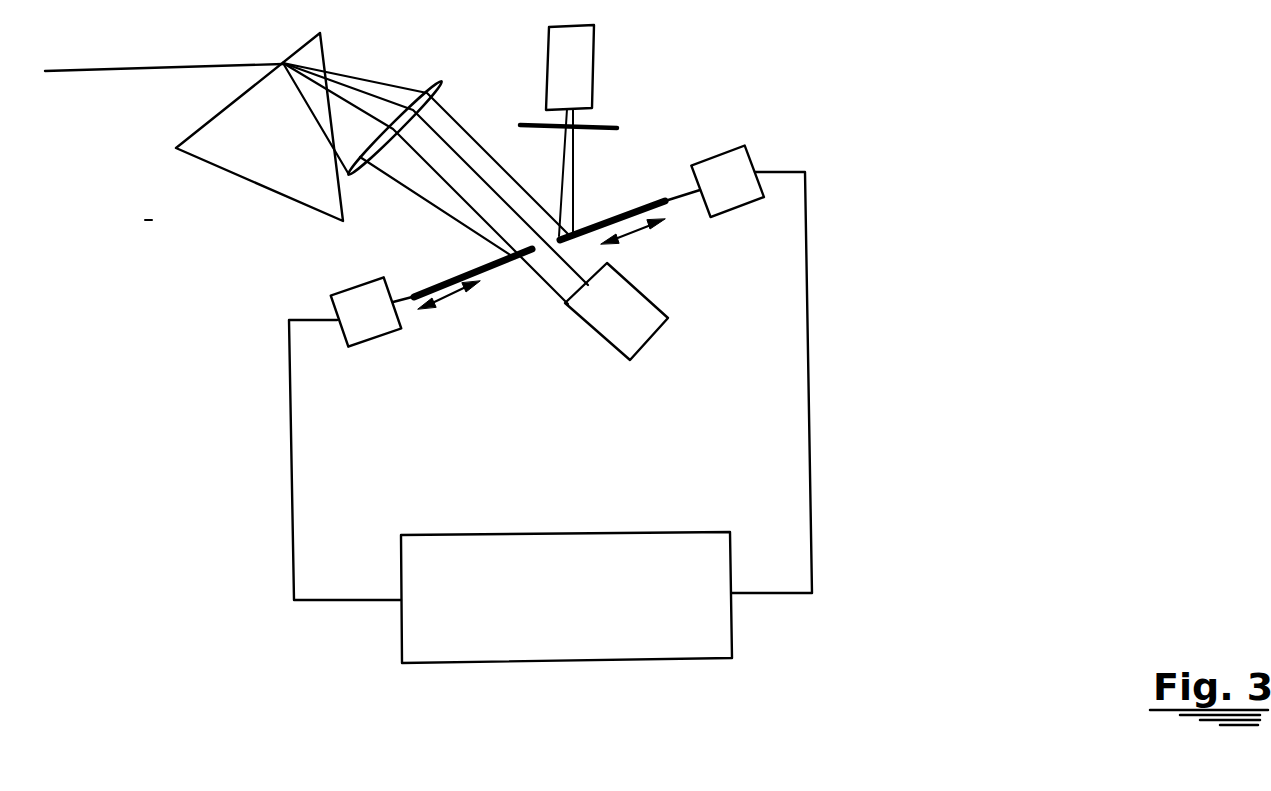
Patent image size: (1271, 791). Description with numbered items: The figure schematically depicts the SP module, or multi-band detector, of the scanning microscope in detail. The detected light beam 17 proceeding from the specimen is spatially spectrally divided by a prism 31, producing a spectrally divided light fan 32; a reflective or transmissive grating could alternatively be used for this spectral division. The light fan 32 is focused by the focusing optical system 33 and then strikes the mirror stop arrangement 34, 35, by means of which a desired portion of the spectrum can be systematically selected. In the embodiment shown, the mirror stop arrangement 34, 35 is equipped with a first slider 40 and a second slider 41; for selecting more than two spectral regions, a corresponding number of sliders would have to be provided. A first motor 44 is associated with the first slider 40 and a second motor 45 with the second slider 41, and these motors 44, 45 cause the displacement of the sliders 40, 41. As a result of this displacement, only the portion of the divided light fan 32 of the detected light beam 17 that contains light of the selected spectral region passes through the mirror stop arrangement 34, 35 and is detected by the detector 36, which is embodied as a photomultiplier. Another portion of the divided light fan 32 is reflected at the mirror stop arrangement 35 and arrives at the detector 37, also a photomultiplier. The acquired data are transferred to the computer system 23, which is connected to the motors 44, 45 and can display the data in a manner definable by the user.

The detected light beam 17 is at (130, 69).
The computer system 23 is at (537, 606).
The prism 31 is at (263, 177).
The spectrally divided light fan 32 is at (346, 82).
The focusing optical system 33 is at (442, 84).
The mirror stop arrangement 34 is at (422, 293).
The mirror stop arrangement 35 is at (617, 222).
The detector 36 is at (611, 335).
The detector 37 is at (593, 58).
The first slider 40 is at (506, 258).
The second slider 41 is at (585, 241).
The first motor 44 is at (340, 302).
The second motor 45 is at (731, 157).